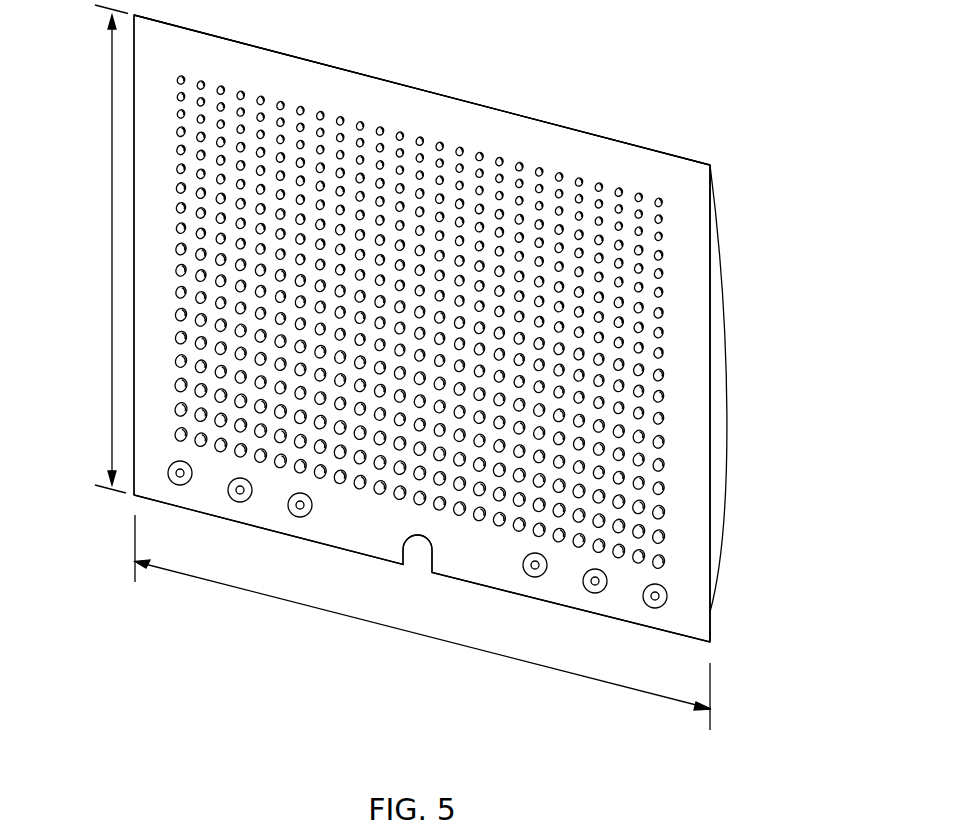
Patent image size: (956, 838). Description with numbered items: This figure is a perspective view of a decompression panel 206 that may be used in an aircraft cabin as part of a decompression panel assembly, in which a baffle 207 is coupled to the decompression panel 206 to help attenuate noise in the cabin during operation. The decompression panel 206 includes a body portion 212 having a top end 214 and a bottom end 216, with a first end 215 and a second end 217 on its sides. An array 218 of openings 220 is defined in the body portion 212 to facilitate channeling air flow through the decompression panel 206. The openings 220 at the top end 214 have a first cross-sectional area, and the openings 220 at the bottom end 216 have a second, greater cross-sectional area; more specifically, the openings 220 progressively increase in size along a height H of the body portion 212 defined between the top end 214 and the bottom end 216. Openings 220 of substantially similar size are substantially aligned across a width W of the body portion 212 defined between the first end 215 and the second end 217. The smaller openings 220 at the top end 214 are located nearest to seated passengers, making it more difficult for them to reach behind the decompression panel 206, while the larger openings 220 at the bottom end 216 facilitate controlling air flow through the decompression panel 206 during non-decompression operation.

The decompression panel 206 is at (628, 91).
The baffle 207 is at (727, 412).
The body portion 212 is at (690, 302).
The top end 214 is at (385, 80).
The first end 215 is at (134, 88).
The bottom end 216 is at (340, 548).
The second end 217 is at (712, 371).
The array 218 is at (681, 463).
The openings 220 is at (665, 540).
The height H is at (112, 220).
The width W is at (450, 642).